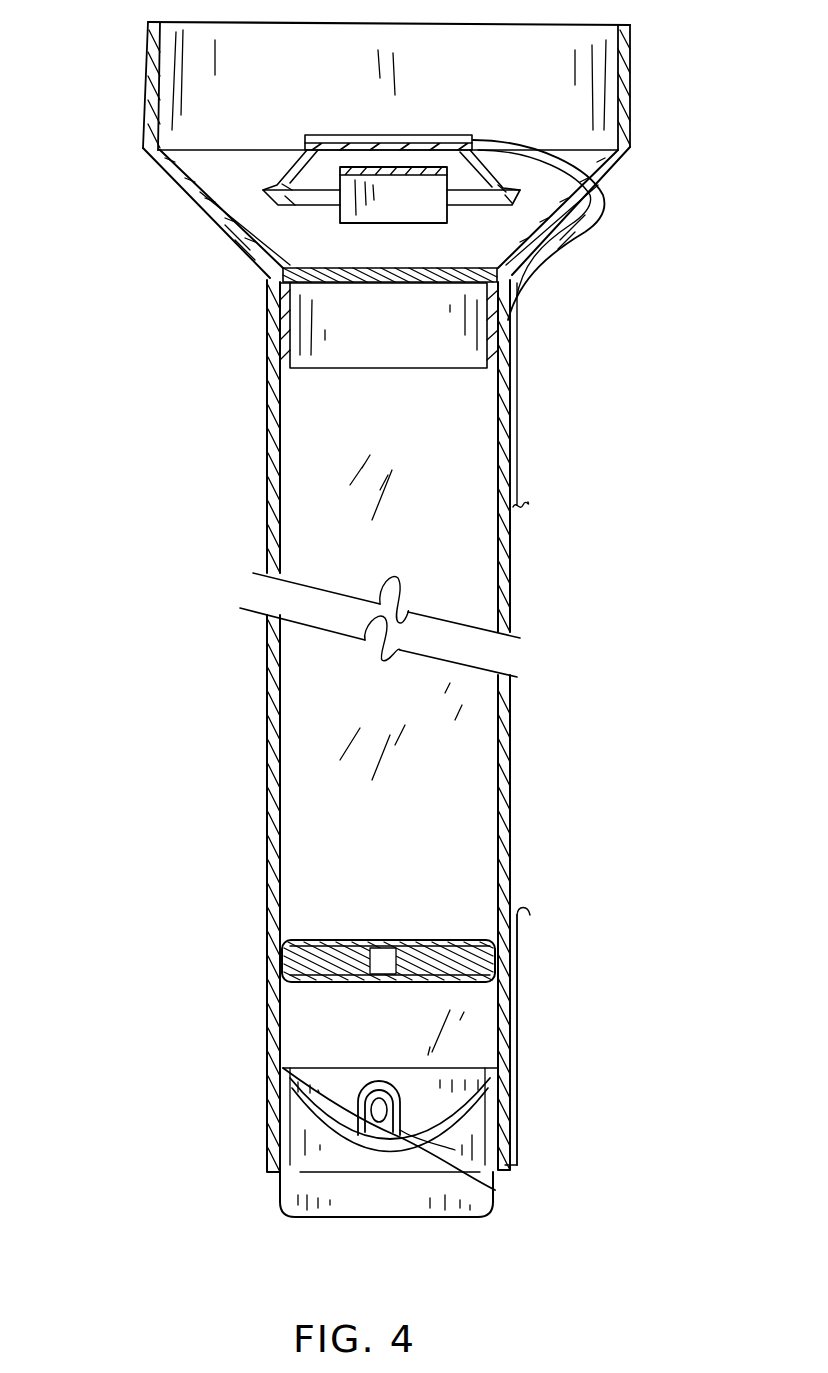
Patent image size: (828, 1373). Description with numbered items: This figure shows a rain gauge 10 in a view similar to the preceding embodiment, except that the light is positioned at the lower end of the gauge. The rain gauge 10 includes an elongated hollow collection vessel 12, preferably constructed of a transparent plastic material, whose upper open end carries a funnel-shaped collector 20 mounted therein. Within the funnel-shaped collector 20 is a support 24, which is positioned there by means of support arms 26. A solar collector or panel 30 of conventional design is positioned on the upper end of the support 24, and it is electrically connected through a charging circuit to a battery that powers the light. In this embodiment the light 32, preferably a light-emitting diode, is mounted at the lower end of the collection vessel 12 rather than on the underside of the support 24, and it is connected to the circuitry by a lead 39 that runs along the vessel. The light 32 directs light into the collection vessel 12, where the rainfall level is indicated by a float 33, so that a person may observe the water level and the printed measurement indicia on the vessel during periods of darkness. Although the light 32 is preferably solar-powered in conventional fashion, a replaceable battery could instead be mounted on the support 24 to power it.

The rain gauge 10 is at (572, 432).
The collection vessel 12 is at (510, 590).
The funnel-shaped collector 20 is at (632, 116).
The support 24 is at (270, 180).
The support arms 26 is at (592, 212).
The solar collector or panel 30 is at (477, 140).
The light 32 is at (283, 1068).
The float 33 is at (420, 940).
The lead 39 is at (530, 920).